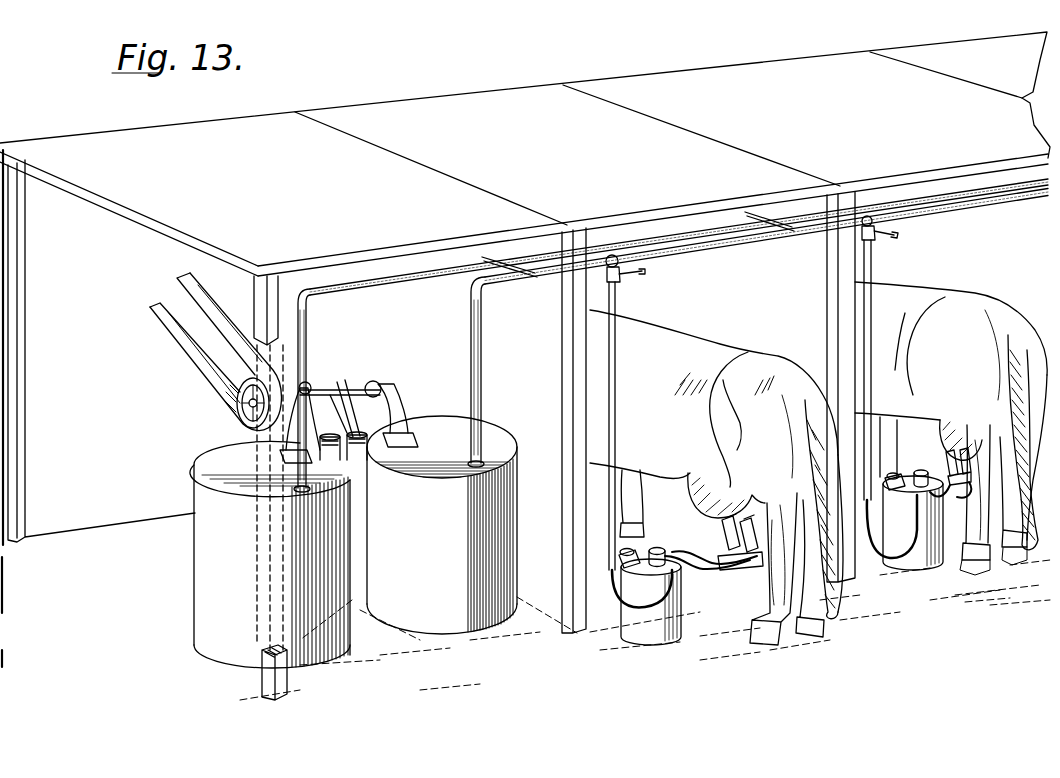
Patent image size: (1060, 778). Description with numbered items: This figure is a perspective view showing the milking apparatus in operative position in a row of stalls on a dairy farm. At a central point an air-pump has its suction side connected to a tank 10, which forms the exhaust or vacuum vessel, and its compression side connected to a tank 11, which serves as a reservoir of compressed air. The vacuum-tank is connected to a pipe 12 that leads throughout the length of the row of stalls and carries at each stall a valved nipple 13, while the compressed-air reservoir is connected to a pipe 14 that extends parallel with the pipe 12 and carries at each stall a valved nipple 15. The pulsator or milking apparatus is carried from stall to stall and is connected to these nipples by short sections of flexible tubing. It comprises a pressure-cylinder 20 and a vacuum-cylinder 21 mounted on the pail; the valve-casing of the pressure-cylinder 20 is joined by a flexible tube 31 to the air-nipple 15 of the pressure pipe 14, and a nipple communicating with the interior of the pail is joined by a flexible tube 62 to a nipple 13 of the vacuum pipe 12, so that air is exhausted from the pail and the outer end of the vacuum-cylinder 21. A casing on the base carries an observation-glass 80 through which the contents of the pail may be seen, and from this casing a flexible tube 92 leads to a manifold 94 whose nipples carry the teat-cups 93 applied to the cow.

The tank 10 is at (442, 525).
The tank 11 is at (190, 557).
The pipe 12 is at (673, 252).
The valved nipple 13 is at (625, 278).
The pipe 14 is at (665, 240).
The valved nipple 15 is at (590, 280).
The pressure-cylinder 20 is at (628, 560).
The vacuum-cylinder 21 is at (658, 576).
The flexible tube 31 is at (587, 323).
The flexible tube 62 is at (617, 305).
The observation-glass 80 is at (662, 555).
The flexible tube 92 is at (700, 572).
The teat-cups 93 is at (728, 521).
The manifold 94 is at (741, 570).